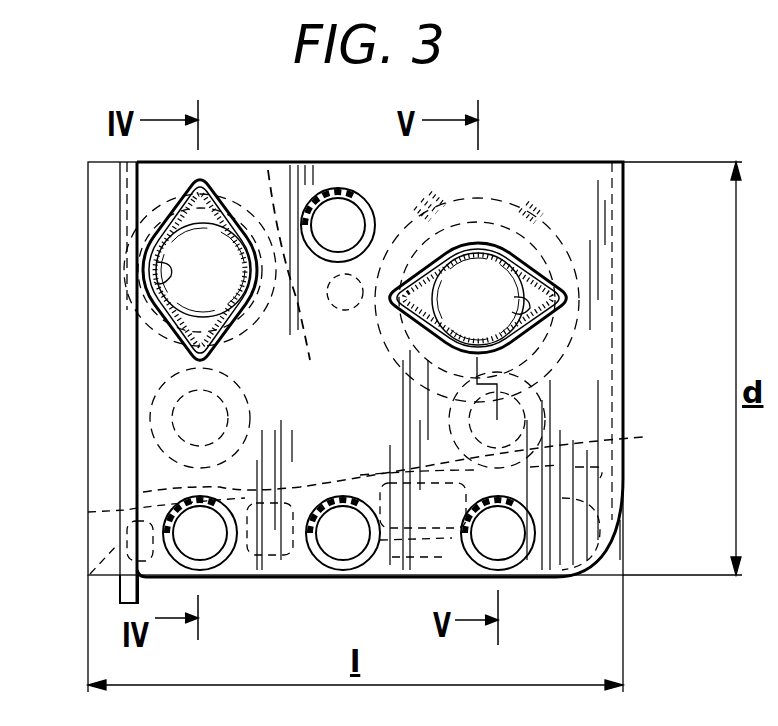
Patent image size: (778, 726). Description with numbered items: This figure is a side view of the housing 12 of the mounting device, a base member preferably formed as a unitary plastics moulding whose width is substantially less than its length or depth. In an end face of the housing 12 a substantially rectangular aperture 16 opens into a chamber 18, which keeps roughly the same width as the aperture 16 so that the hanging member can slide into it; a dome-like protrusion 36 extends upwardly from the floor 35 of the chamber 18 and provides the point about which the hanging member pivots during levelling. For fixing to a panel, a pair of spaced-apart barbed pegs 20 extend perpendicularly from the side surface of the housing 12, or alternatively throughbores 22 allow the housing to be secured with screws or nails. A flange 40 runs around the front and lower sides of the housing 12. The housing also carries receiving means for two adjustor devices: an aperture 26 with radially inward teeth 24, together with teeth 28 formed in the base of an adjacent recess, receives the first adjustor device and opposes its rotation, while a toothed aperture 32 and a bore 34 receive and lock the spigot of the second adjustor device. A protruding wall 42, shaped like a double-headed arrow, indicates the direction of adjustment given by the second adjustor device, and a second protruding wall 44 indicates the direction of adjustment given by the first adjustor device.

The housing 12 is at (556, 178).
The aperture 16 is at (112, 365).
The chamber 18 is at (269, 165).
The pegs 20 is at (145, 427).
The throughbores 22 is at (347, 192).
The teeth 24 is at (524, 308).
The aperture 26 is at (510, 283).
The teeth 28 is at (576, 222).
The aperture 32 is at (156, 262).
The aperture 34 is at (162, 242).
The floor 35 is at (143, 492).
The dome-like protrusion 36 is at (410, 455).
The flange 40 is at (124, 588).
The protruding wall 42 is at (149, 300).
The protruding wall 44 is at (498, 245).